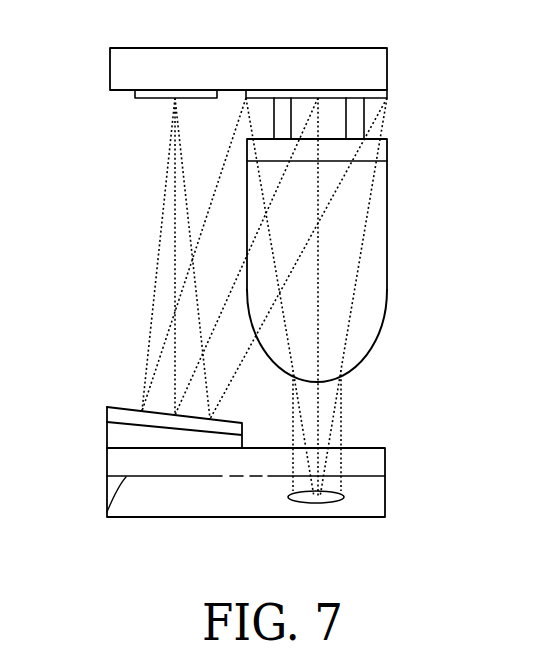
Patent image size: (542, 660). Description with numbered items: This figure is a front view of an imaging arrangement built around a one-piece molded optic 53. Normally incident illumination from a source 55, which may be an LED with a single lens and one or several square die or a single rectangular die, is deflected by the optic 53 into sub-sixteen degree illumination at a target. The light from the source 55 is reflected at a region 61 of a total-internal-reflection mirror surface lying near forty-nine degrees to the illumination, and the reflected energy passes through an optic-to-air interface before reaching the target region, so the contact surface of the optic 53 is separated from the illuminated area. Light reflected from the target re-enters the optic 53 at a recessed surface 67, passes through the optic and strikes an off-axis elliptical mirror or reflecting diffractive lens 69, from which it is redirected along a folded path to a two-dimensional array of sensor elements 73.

The one-piece molded optic 53 is at (207, 466).
The source 55 is at (388, 272).
The region of the TIR mirror 61 is at (326, 498).
The recessed surface 67 is at (107, 512).
The off-axis elliptical mirror or reflecting diffractive lens 69 is at (337, 98).
The two-dimensional array of sensor elements 73 is at (193, 98).